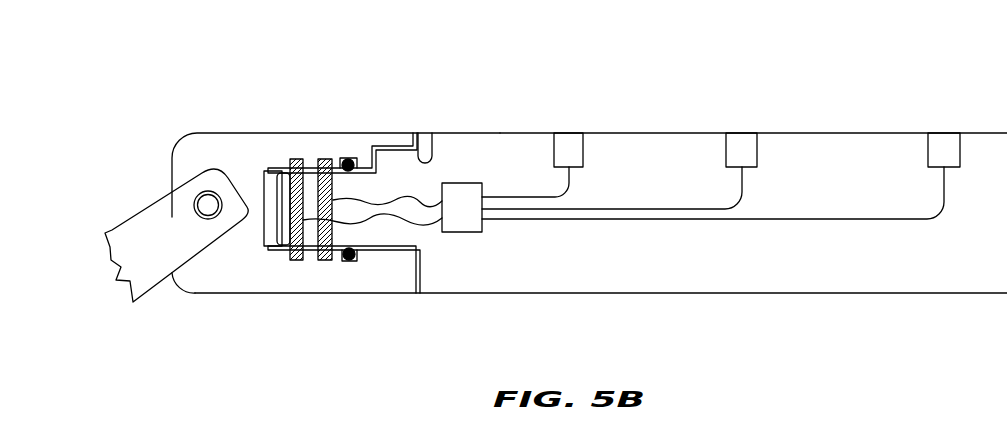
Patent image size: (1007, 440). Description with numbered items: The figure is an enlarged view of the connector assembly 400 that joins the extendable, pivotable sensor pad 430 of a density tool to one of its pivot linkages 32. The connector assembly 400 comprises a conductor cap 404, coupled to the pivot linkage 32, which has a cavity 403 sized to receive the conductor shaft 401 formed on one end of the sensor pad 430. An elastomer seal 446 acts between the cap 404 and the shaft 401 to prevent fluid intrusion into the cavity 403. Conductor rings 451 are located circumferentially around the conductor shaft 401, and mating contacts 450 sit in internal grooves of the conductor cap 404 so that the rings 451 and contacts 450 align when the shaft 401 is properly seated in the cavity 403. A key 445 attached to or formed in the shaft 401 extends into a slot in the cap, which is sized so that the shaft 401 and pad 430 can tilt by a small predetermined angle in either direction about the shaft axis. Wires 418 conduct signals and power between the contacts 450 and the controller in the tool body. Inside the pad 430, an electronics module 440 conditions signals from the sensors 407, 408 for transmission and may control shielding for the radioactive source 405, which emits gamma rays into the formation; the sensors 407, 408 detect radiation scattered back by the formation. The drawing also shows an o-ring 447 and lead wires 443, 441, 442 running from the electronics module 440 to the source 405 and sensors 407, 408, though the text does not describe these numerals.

The connector assembly 400 is at (281, 55).
The conductor cap 404 is at (223, 132).
The sensor pad 430 is at (625, 133).
The pivot linkage 32 is at (150, 208).
The cavity 403 is at (268, 243).
The conductor shaft 401 is at (276, 246).
The mating contacts 450 is at (325, 158).
The conductor rings 451 is at (323, 198).
The elastomer seal 446 is at (383, 132).
The key 445 is at (427, 138).
The O-ring 447 is at (350, 261).
The wires 418 is at (297, 262).
The electronics module 440 is at (462, 183).
The sensor wires 443 is at (517, 197).
The radioactive source 405 is at (567, 132).
The lead wire 441 is at (690, 209).
The sensor 407 is at (743, 132).
The lead wire 442 is at (849, 219).
The sensor 408 is at (943, 132).